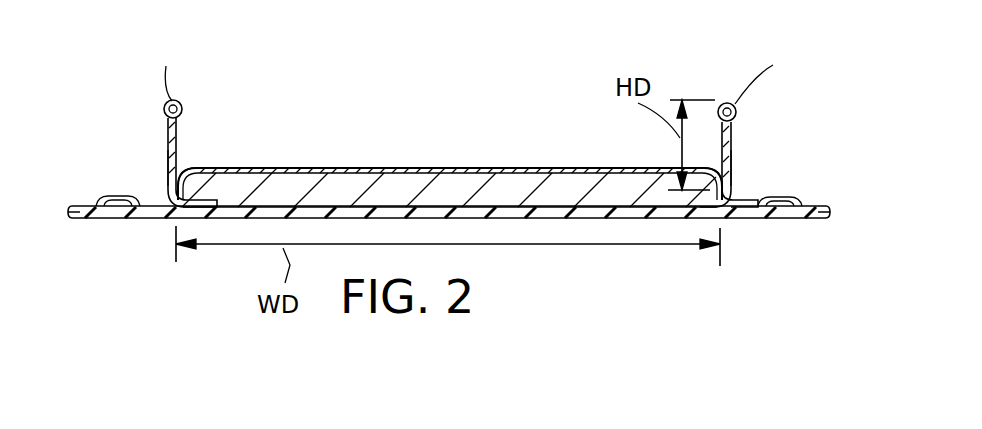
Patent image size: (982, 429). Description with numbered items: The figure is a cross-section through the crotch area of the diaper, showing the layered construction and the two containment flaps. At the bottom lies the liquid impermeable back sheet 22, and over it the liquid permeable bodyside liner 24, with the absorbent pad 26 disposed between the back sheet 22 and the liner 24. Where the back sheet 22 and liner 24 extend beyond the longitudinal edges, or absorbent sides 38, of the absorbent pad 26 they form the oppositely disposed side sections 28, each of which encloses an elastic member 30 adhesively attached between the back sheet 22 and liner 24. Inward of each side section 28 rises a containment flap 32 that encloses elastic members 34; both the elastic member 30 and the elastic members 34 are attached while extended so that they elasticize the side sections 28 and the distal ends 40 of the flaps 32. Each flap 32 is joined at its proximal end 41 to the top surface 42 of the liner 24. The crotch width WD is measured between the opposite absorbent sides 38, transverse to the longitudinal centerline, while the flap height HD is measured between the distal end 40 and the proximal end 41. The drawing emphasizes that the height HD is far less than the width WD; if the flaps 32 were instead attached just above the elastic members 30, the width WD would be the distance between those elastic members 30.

The back sheet 22 is at (743, 218).
The bodyside liner 24 is at (535, 168).
The absorbent pad 26 is at (435, 187).
The side sections 28 is at (87, 219).
The elastic member 30 is at (123, 197).
The containment flap 32 is at (168, 148).
The elastic members 34 is at (165, 103).
The absorbent sides 38 is at (196, 197).
The distal end 40 is at (176, 103).
The proximal end 41 is at (166, 186).
The top surface 42 is at (350, 168).